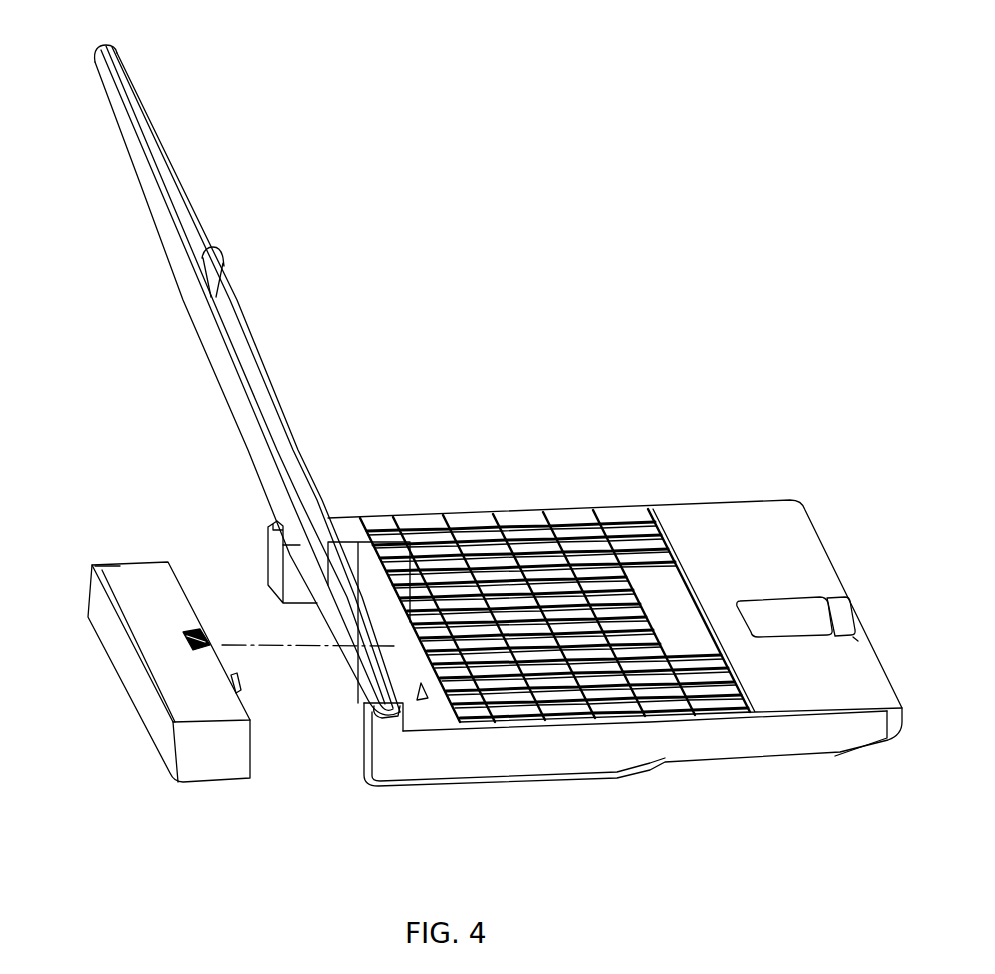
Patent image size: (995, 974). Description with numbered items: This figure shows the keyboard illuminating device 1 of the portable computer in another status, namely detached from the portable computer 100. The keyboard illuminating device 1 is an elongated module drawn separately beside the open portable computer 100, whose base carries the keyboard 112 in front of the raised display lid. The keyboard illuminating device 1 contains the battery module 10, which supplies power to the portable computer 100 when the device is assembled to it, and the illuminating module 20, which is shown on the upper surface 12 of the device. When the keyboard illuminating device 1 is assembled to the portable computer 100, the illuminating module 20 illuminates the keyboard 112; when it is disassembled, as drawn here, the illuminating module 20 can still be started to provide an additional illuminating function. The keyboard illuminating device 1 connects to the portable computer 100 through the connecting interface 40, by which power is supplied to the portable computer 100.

The keyboard illuminating device 1 is at (126, 532).
The battery module 10 is at (179, 674).
The top surface of docking module 12 is at (140, 608).
The illuminating module 20 is at (198, 630).
The connecting interface 40 is at (237, 692).
The portable computer 100 is at (498, 415).
The keyboard 112 is at (520, 530).